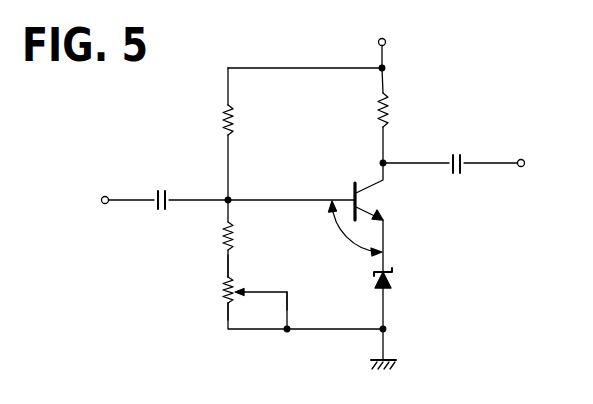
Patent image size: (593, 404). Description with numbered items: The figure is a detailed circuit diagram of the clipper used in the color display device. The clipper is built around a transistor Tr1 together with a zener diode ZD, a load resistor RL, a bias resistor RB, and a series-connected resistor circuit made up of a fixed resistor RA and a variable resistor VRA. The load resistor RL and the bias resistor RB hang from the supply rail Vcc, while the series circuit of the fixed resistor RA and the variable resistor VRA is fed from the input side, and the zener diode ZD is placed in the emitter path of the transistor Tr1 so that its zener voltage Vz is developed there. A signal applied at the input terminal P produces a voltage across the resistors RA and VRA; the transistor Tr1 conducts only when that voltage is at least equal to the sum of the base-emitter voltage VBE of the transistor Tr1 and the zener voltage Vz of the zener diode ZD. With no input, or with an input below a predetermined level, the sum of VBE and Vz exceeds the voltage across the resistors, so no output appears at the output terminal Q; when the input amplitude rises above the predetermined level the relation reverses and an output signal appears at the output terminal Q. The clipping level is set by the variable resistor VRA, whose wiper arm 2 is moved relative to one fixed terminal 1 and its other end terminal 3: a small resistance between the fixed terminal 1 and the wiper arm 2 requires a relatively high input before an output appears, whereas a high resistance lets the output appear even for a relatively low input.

The supply voltage terminal Vcc is at (313, 41).
The bias resistor RB is at (245, 134).
The load resistor RL is at (397, 115).
The input terminal P is at (224, 188).
The fixed resistor RA is at (244, 238).
The variable resistor VRA is at (274, 304).
The fixed terminal 1 is at (235, 266).
The wiper arm 2 is at (294, 294).
The variable resistor terminal 3 is at (236, 311).
The transistor Tr1 is at (385, 216).
The output terminal Q is at (454, 154).
The base-emitter voltage VBE is at (342, 228).
The zener diode ZD is at (401, 314).
The zener voltage Vz is at (397, 319).